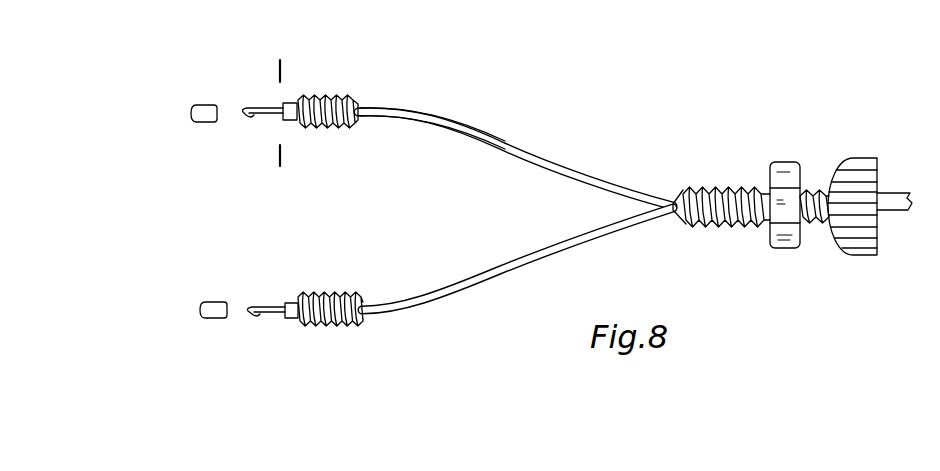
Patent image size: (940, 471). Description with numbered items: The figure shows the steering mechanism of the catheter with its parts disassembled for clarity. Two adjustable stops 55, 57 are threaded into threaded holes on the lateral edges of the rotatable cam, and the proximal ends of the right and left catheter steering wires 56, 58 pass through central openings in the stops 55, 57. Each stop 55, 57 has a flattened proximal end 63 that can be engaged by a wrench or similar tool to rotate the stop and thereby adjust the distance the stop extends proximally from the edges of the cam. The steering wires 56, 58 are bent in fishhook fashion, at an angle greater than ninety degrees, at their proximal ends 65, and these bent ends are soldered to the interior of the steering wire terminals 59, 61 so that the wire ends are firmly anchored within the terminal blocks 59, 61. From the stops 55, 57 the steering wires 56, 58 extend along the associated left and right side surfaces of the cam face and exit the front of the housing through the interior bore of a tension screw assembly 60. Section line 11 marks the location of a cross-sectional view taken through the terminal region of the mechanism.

The section line 11- 11 is at (270, 156).
The adjustable stop 55 is at (364, 104).
The right catheter steering wire 56 is at (553, 255).
The adjustable stop 57 is at (373, 278).
The left catheter steering wire 58 is at (577, 172).
The steering wire terminal 59 is at (189, 112).
The tension screw assembly 60 is at (865, 163).
The steering wire terminal 61 is at (203, 302).
The flattened proximal end 63 is at (291, 101).
The proximal end of steering wire 65 is at (254, 119).